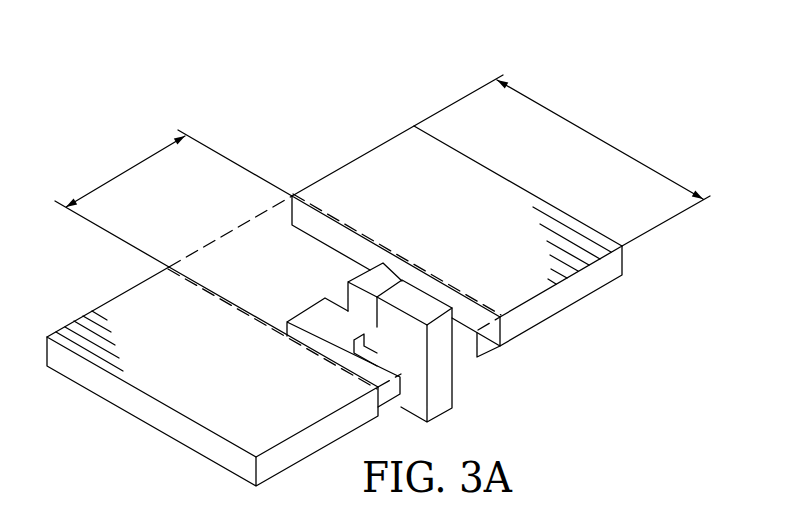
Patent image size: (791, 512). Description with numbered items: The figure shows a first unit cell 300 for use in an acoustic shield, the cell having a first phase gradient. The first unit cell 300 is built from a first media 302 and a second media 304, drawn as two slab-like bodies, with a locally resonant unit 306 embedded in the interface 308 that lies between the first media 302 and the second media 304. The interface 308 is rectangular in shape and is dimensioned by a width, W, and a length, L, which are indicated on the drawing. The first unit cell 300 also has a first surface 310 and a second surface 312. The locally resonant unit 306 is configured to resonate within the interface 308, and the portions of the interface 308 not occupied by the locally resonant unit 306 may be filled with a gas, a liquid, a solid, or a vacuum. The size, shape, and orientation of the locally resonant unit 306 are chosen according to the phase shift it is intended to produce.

The first unit cell 300 is at (194, 92).
The first media 302 is at (108, 313).
The second media 304 is at (365, 167).
The locally resonant unit 306 is at (455, 391).
The interface 308 is at (231, 232).
The first surface 310 is at (133, 403).
The second surface 312 is at (513, 182).